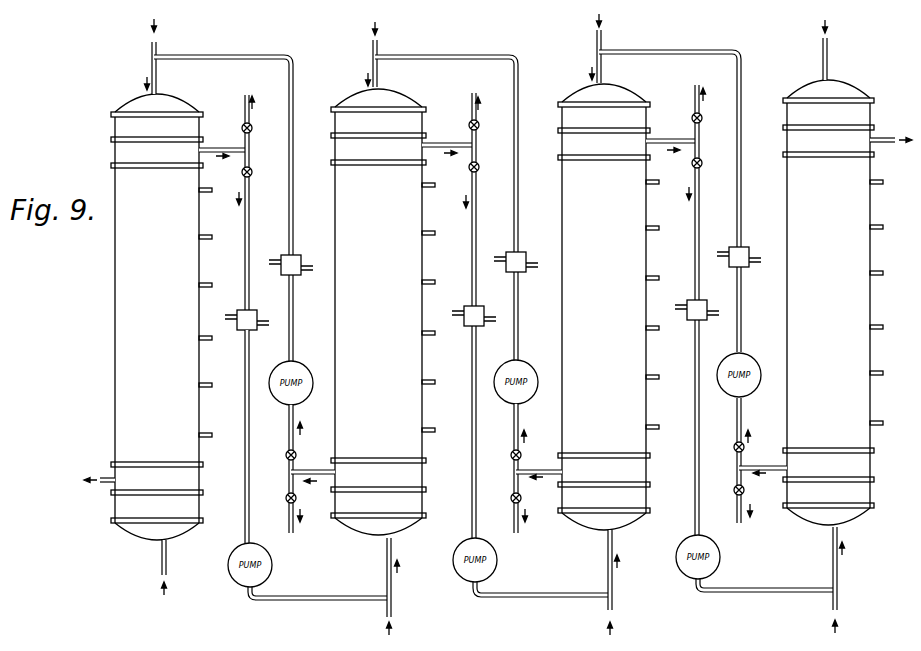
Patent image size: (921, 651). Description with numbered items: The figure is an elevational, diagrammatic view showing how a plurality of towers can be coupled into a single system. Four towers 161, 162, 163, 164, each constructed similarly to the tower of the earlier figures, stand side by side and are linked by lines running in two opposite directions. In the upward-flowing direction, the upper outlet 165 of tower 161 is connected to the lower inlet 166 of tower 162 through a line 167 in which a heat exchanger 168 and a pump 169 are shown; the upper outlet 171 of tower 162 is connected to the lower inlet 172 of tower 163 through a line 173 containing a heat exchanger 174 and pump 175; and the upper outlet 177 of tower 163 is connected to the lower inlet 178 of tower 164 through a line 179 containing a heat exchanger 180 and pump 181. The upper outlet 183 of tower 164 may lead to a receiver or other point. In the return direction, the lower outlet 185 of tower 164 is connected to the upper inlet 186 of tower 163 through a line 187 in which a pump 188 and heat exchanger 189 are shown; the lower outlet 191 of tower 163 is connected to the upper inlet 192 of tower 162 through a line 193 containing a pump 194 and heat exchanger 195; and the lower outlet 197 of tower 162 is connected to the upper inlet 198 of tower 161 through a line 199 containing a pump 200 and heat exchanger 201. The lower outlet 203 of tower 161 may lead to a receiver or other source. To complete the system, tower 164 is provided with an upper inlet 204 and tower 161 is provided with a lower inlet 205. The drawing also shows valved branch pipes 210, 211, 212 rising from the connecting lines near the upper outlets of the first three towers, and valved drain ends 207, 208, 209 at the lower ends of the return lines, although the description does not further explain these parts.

The tower 161 is at (161, 317).
The tower 162 is at (383, 312).
The tower 163 is at (608, 307).
The tower 164 is at (833, 302).
The upper outlet 165 is at (216, 149).
The lower inlet 166 is at (387, 555).
The line 167 is at (247, 516).
The heat exchanger 168 is at (256, 313).
The pump 169 is at (240, 580).
The upper outlet 171 is at (455, 140).
The lower inlet 172 is at (607, 560).
The line 173 is at (477, 222).
The heat exchanger 174 is at (480, 306).
The pump 175 is at (460, 575).
The upper outlet 177 is at (665, 141).
The lower inlet 178 is at (832, 565).
The line 179 is at (700, 222).
The heat exchanger 180 is at (704, 305).
The pump 181 is at (685, 572).
The upper outlet 183 is at (882, 138).
The lower outlet 185 is at (745, 490).
The upper inlet 186 is at (605, 72).
The line 187 is at (744, 426).
The pump 188 is at (752, 362).
The heat exchanger 189 is at (748, 252).
The lower outlet 191 is at (560, 470).
The upper inlet 192 is at (380, 76).
The line 193 is at (521, 428).
The pump 194 is at (525, 366).
The heat exchanger 195 is at (526, 260).
The lower outlet 197 is at (336, 470).
The upper inlet 198 is at (157, 76).
The line 199 is at (294, 330).
The pump 200 is at (305, 370).
The heat exchanger 201 is at (297, 257).
The lower outlet 203 is at (104, 490).
The upper inlet 204 is at (830, 60).
The lower inlet 205 is at (162, 558).
The drain pipe 207 is at (291, 540).
The drain pipe 208 is at (520, 534).
The drain pipe 209 is at (745, 526).
The valved pipe 210 is at (250, 128).
The valved pipe 211 is at (472, 100).
The valved pipe 212 is at (700, 108).